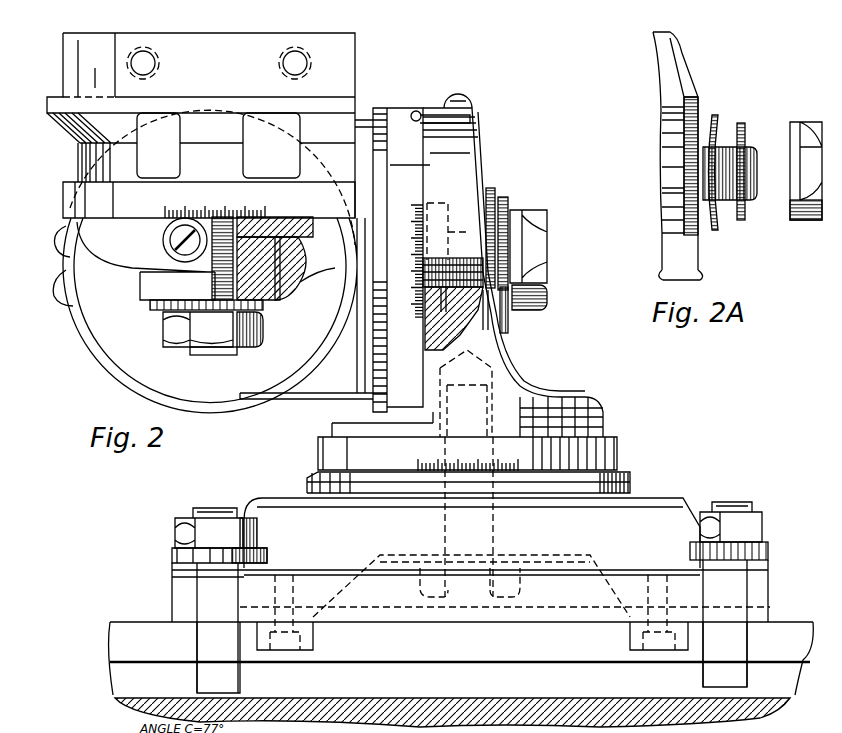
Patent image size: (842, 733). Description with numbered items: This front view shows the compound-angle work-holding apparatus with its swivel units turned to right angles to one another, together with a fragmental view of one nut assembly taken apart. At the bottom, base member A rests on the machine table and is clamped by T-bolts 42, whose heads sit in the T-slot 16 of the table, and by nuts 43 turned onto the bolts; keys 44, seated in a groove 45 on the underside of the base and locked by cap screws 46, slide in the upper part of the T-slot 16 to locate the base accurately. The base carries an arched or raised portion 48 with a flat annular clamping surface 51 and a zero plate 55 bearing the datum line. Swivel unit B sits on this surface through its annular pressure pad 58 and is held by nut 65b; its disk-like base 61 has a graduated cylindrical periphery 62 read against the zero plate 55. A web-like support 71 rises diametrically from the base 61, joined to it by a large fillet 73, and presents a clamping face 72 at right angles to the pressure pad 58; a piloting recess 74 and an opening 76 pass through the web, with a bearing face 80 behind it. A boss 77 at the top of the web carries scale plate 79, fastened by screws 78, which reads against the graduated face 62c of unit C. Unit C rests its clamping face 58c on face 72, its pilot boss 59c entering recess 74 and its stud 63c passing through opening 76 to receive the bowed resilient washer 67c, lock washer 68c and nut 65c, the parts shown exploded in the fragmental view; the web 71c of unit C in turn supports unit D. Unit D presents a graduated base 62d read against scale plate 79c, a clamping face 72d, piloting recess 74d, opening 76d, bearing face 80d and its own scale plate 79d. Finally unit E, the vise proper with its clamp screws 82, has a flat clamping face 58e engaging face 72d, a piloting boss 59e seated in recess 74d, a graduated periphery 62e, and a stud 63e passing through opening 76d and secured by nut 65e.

In FIG. 2, the vise unit E is at (52, 95).
In FIG. 2, the clamp screws 82 is at (141, 57).
In FIG. 2, the cylindrical periphery 62e is at (66, 198).
In FIG. 2, the stud 63e is at (227, 217).
In FIG. 2, the swivel unit D is at (138, 284).
In FIG. 2, the graduated base 62d is at (327, 358).
In FIG. 2, the scale plate 79c is at (90, 318).
In FIG. 2, the scale plate 79d is at (207, 252).
In FIG. 2, the clamping face 72d is at (305, 222).
In FIG. 2, the piloting recess 74d is at (287, 268).
In FIG. 2, the bearing face 80d is at (287, 300).
In FIG. 2, the nut 65e is at (180, 333).
In FIG. 2, the opening 76d is at (247, 337).
In FIG. 2, the piloting boss 59e is at (265, 220).
In FIG. 2, the clamping face 58e is at (312, 203).
In FIG. 2, the web-like support 71c is at (332, 394).
In FIG. 2, the clamping face 72 is at (430, 165).
In FIG. 2, the web-like support 71 is at (483, 143).
In FIG. 2, the swivel unit B is at (487, 153).
In FIG. 2A, the swivel unit B is at (680, 46).
In FIG. 2, the boss 77 is at (472, 113).
In FIG. 2, the screws 78 is at (457, 95).
In FIG. 2, the scale plate 79 is at (470, 105).
In FIG. 2, the clamping face 58c is at (420, 110).
In FIG. 2, the graduated cylindrical face 62c is at (380, 107).
In FIG. 2, the stud 63c is at (463, 258).
In FIG. 2A, the stud 63c is at (752, 200).
In FIG. 2, the pilot boss 59c is at (428, 335).
In FIG. 2, the resilient washer 67c is at (505, 212).
In FIG. 2A, the resilient washer 67c is at (714, 115).
In FIG. 2, the lock washer 68c is at (523, 222).
In FIG. 2A, the lock washer 68c is at (742, 123).
In FIG. 2, the nut 65c is at (546, 232).
In FIG. 2A, the nut 65c is at (805, 122).
In FIG. 2, the bearing face 80 is at (508, 327).
In FIG. 2, the opening 76 is at (488, 300).
In FIG. 2, the piloting recess 74 is at (473, 327).
In FIG. 2, the fillet 73 is at (525, 387).
In FIG. 2, the base 61 is at (600, 412).
In FIG. 2, the cylindrical periphery 62 is at (318, 457).
In FIG. 2, the pressure pad 58 is at (619, 468).
In FIG. 2, the arched portion 48 is at (637, 497).
In FIG. 2, the base member A is at (685, 493).
In FIG. 2, the clamping surface 51 is at (340, 493).
In FIG. 2, the zero plate 55 is at (440, 470).
In FIG. 2, the nuts 43 is at (182, 540).
In FIG. 2, the T-bolts 42 is at (203, 632).
In FIG. 2, the T-slot 16 is at (495, 650).
In FIG. 2, the keys 44 is at (312, 637).
In FIG. 2, the cap screws 46 is at (650, 645).
In FIG. 2, the groove 45 is at (407, 607).
In FIG. 2, the nut 65b is at (517, 600).